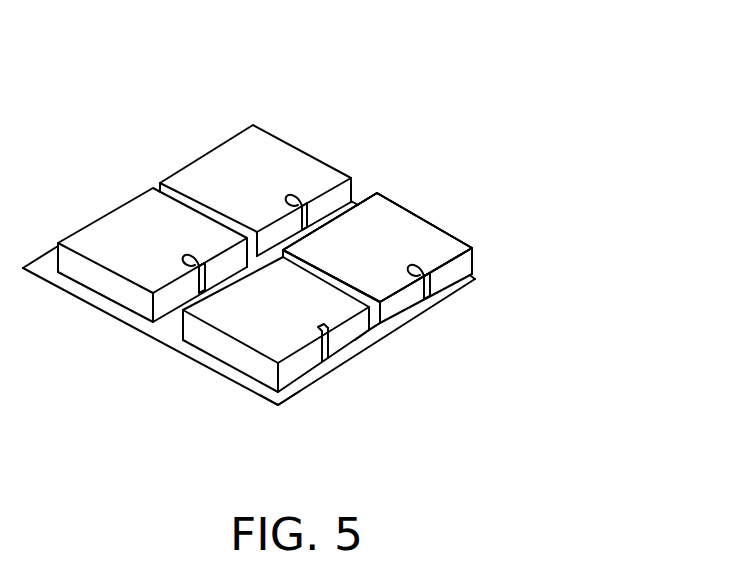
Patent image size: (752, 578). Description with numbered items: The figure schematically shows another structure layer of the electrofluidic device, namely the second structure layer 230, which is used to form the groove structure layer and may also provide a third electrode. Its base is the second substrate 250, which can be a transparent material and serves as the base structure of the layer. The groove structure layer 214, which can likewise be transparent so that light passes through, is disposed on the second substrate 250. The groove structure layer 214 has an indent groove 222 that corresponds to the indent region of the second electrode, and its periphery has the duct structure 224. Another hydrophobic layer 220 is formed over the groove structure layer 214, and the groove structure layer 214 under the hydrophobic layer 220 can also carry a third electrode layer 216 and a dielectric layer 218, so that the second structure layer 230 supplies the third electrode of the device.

The groove structure layer 214 is at (463, 267).
The third electrode layer 216 is at (482, 250).
The dielectric layer 218 is at (468, 247).
The hydrophobic layer 220 is at (336, 316).
The indent groove 222 is at (312, 323).
The duct structure 224 is at (297, 392).
The second structure layer 230 is at (338, 252).
The second substrate 250 is at (477, 278).